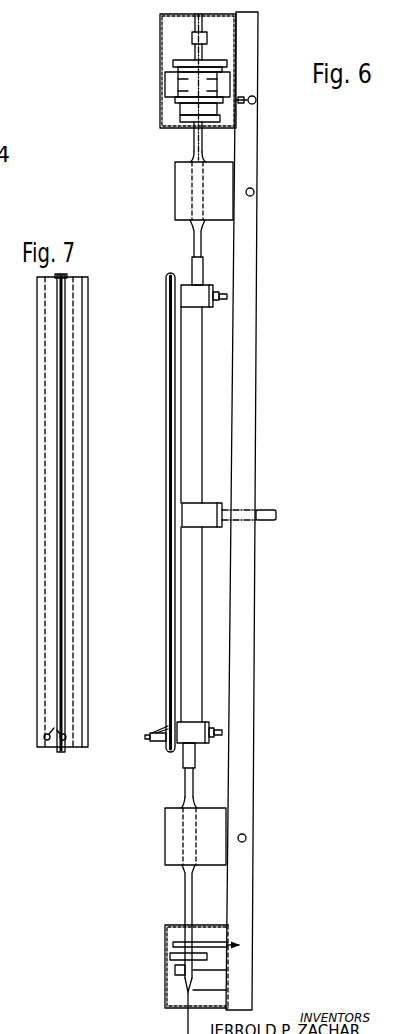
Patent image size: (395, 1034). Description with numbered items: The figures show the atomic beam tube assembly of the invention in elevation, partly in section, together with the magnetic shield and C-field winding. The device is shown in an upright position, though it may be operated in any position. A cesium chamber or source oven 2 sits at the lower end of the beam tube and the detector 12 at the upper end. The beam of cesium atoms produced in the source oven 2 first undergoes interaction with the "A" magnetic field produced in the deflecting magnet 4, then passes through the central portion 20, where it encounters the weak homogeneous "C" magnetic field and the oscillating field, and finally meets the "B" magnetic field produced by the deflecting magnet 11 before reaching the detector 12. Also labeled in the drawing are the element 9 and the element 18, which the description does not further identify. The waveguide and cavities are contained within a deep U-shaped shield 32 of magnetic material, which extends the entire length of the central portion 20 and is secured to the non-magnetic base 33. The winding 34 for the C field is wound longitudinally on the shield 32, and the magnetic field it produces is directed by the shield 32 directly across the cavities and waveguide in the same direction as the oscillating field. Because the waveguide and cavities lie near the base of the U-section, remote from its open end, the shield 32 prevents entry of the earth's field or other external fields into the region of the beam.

In FIG. 6, the source oven 2 is at (197, 986).
In FIG. 6, the deflecting magnet 4 is at (165, 836).
In FIG. 6, the shaft 9 is at (184, 905).
In FIG. 6, the deflecting magnet 11 is at (177, 180).
In FIG. 6, the detector 12 is at (160, 67).
In FIG. 6, the shaft coupling 18 is at (192, 28).
In FIG. 6, the central portion 20 is at (150, 289).
In FIG. 7, the U-shaped shield 32 is at (66, 656).
In FIG. 6, the non-magnetic base 33 is at (256, 647).
In FIG. 7, the winding 34 is at (58, 749).